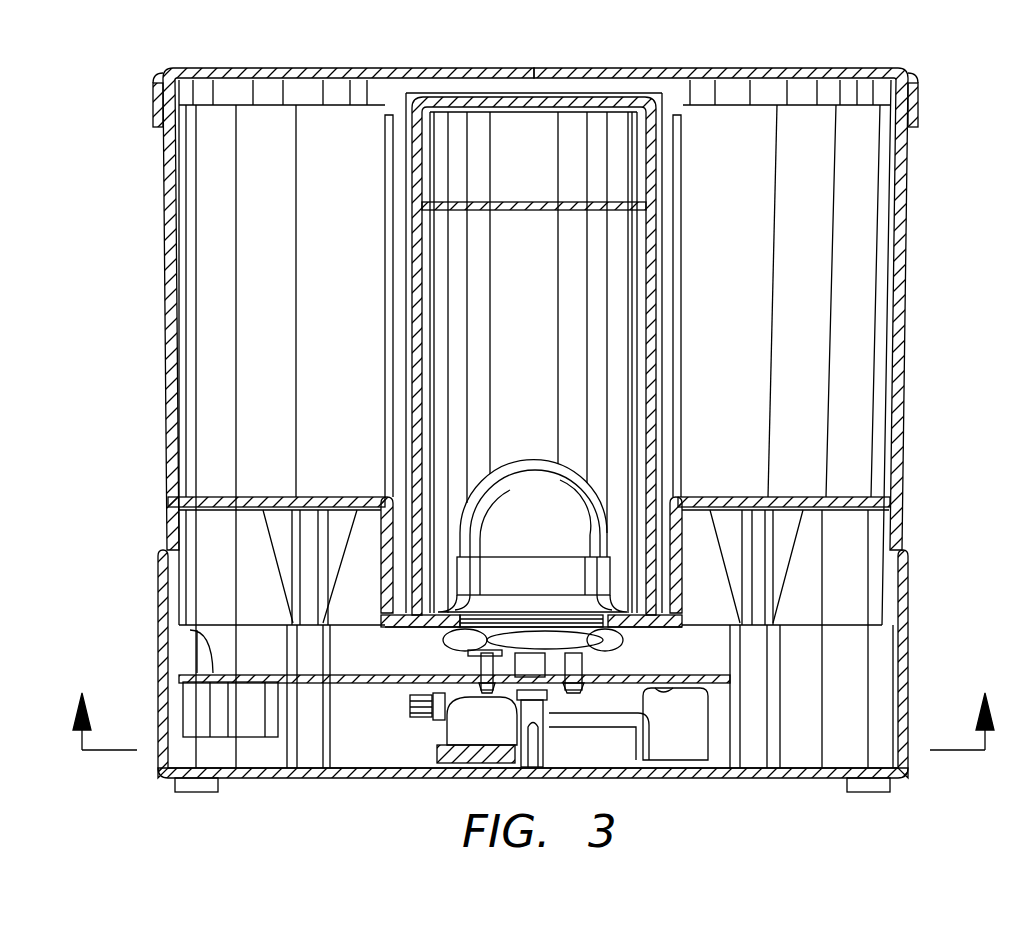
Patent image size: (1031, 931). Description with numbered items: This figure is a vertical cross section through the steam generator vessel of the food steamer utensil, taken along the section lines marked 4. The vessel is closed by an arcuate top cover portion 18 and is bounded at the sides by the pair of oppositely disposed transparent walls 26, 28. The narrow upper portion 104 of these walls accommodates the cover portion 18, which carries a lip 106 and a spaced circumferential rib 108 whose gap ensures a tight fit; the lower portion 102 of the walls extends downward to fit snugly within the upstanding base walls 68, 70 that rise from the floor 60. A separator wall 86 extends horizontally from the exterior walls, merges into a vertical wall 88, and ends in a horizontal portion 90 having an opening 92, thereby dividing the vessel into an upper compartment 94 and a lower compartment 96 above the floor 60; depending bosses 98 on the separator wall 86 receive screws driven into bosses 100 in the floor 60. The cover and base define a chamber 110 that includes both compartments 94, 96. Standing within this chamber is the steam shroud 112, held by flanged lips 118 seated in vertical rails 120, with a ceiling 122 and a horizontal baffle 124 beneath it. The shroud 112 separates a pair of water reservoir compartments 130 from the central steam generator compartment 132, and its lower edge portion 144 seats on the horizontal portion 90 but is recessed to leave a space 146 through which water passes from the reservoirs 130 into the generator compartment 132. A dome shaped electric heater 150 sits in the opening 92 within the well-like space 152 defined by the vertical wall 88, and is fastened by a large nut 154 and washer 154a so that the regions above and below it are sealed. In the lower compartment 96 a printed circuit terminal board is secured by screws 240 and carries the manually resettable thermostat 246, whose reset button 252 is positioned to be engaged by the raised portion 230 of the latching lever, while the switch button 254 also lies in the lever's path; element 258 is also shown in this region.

The section line 4- 4 is at (532, 698).
The top cover portion 18 is at (272, 68).
The wall 26 is at (164, 290).
The wall 28 is at (906, 290).
The floor 60 is at (297, 780).
The wall 68 is at (158, 577).
The wall 70 is at (908, 590).
The separator wall 86 is at (226, 497).
The vertical wall 88 is at (350, 508).
The horizontal portion 90 is at (410, 632).
The opening 92 is at (588, 683).
The upper compartment 94 is at (320, 249).
The compartment 96 is at (240, 627).
The depending bosses 98 is at (297, 528).
The bosses 100 is at (763, 673).
The lower portion 102 is at (165, 545).
The upper portion 104 is at (160, 80).
The lip 106 is at (153, 122).
The circumferential rib 108 is at (205, 96).
The chamber 110 is at (718, 264).
The steam shroud 112 is at (656, 353).
The flanged lip 118 is at (404, 120).
The vertical rails 120 is at (385, 180).
The ceiling 122 is at (527, 93).
The horizontal baffle 124 is at (530, 200).
The water reservoir compartments 130 is at (255, 188).
The steam generator compartment 132 is at (548, 344).
The edge portion 144 is at (393, 602).
The space 146 is at (672, 602).
The electric heater 150 is at (548, 532).
The well-like space 152 is at (620, 520).
The nut 154 is at (523, 637).
The fan blade 154a is at (420, 633).
The raised portion 230 is at (527, 723).
The screws 240 is at (663, 692).
The thermostat 246 is at (583, 683).
The reset button 252 is at (547, 703).
The button 254 is at (400, 720).
The bracket 258 is at (212, 673).